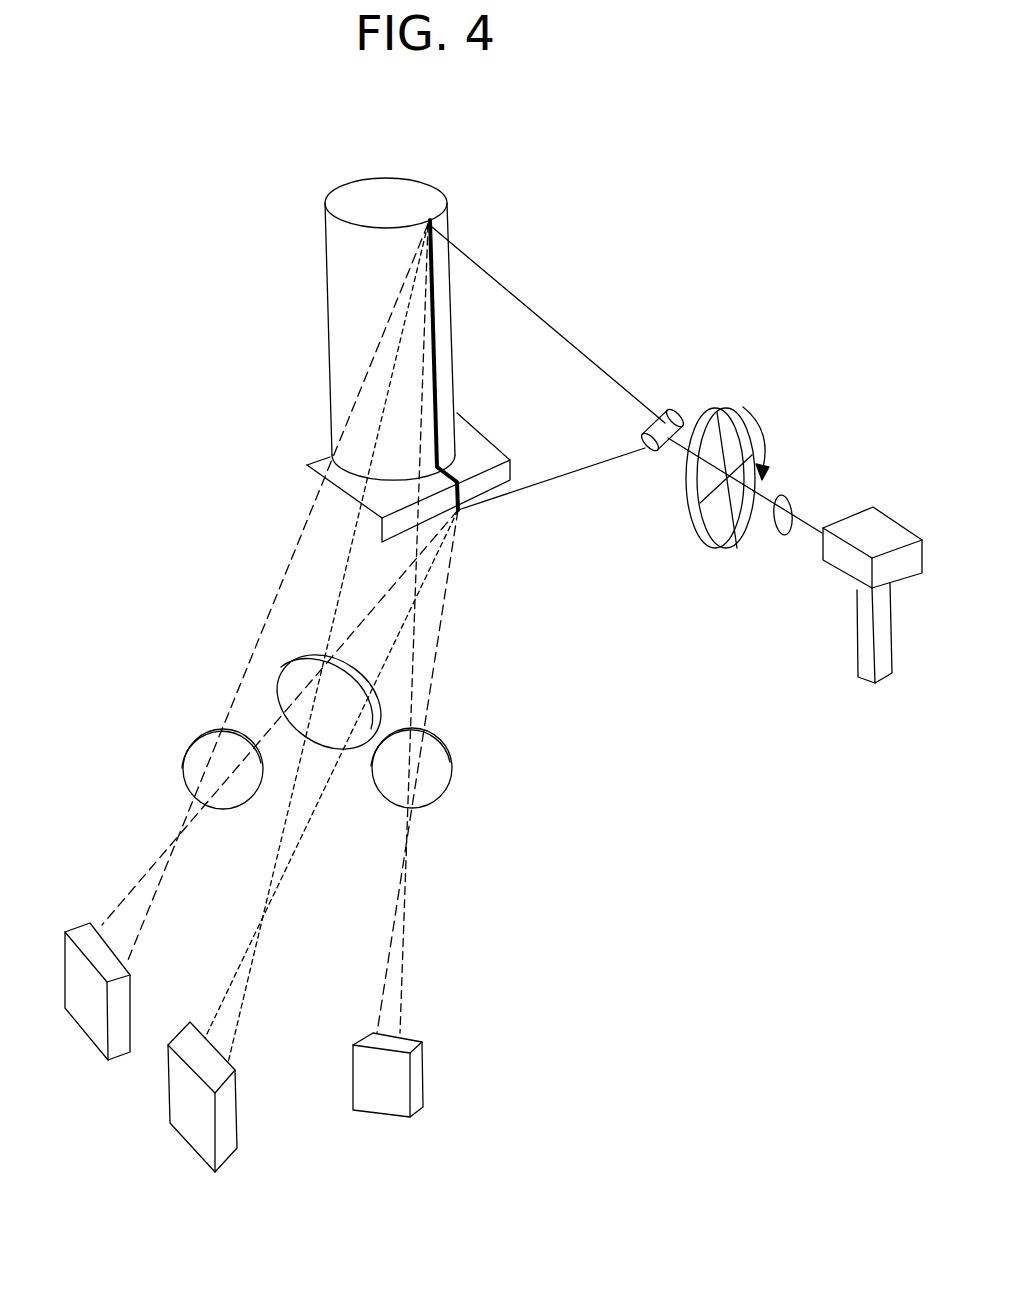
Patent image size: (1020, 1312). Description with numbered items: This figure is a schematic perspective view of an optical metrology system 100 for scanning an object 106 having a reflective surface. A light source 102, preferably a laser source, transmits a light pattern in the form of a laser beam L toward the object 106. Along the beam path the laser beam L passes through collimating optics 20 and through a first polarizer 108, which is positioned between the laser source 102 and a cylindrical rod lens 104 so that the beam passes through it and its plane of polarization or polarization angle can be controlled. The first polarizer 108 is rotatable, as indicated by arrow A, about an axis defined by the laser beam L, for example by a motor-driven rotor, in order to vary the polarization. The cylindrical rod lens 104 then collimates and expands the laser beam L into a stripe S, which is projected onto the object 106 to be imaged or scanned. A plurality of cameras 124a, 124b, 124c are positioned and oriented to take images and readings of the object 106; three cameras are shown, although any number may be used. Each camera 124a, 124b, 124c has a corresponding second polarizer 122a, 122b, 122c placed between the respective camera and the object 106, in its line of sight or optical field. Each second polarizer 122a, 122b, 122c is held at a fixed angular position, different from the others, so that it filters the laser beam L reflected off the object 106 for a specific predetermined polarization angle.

The optical metrology system 100 is at (222, 258).
The object 106 is at (340, 330).
The cylindrical rod lens 104 is at (650, 447).
The first polarizer 108 is at (707, 547).
The collimating optics 20 is at (787, 497).
The light source 102 is at (843, 565).
The second polarizer 122a is at (197, 760).
The second polarizer 122b is at (302, 657).
The second polarizer 122c is at (432, 780).
The camera 124a is at (87, 1025).
The camera 124b is at (228, 1118).
The camera 124c is at (382, 1105).
The stripe S is at (432, 226).
The arrow A is at (756, 432).
The laser beam L is at (805, 535).